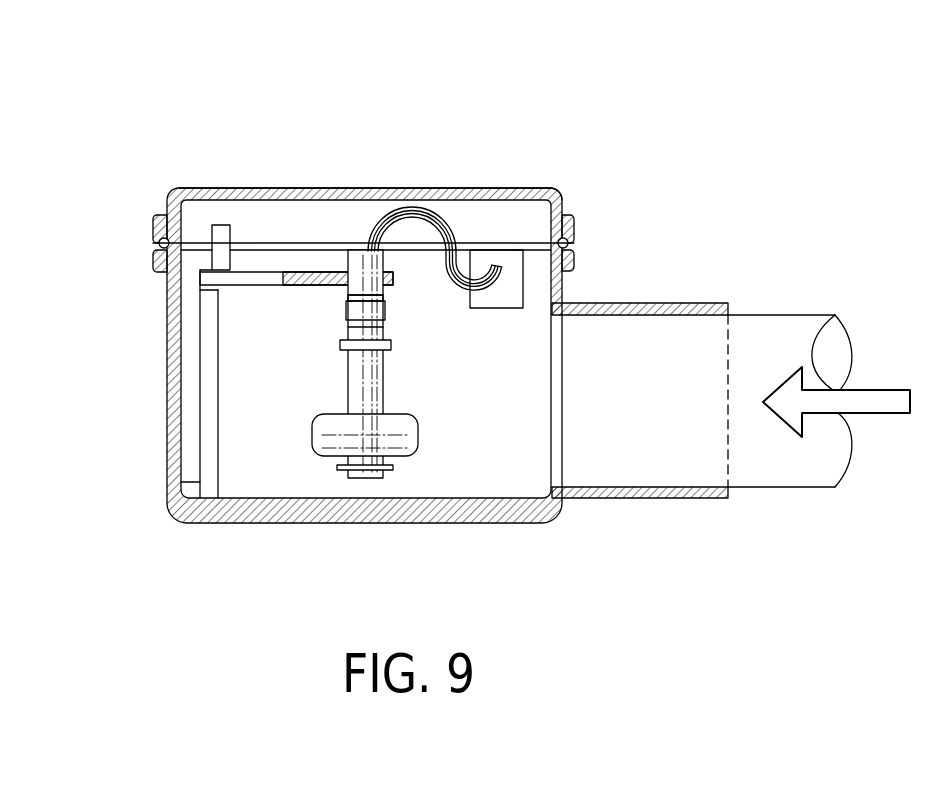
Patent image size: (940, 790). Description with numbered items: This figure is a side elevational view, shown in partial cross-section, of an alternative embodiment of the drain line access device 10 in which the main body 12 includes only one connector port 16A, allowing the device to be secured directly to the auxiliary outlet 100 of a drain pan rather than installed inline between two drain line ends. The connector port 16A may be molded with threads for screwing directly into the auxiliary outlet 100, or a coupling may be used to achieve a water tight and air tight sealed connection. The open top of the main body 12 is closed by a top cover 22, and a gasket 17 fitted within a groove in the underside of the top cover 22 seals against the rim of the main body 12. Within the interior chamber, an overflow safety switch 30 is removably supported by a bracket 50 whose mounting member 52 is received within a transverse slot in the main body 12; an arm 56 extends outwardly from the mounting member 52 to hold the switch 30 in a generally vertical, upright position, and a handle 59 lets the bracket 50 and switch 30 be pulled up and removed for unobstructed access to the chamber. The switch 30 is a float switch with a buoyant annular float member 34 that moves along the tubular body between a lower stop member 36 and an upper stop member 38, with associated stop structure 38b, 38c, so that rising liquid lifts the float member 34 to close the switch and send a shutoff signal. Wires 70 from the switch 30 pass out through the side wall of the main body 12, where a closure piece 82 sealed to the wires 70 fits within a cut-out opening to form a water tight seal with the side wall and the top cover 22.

The access device 10 is at (170, 155).
The main body 12 is at (227, 538).
The input connector port 16A is at (728, 495).
The gasket 17 is at (160, 238).
The top cover 22 is at (533, 190).
The overflow safety switch 30 is at (347, 379).
The annular float member 34 is at (418, 433).
The lower stop member 36 is at (393, 467).
The upper stop member 38 is at (391, 347).
The bearing 38b is at (390, 300).
The bearing collar 38c is at (390, 326).
The bracket 50 is at (246, 214).
The mounting member 52 is at (195, 403).
The arm 56 is at (298, 287).
The handle 59 is at (223, 235).
The wires 70 is at (441, 218).
The closure piece 82 is at (497, 293).
The auxiliary outlet 100 is at (797, 488).